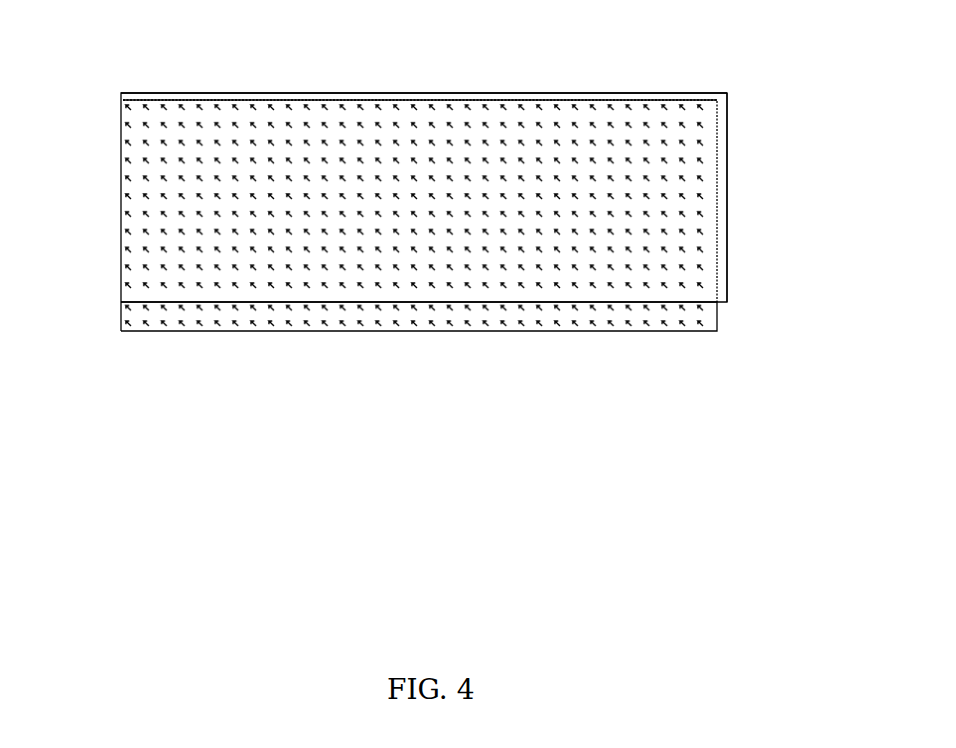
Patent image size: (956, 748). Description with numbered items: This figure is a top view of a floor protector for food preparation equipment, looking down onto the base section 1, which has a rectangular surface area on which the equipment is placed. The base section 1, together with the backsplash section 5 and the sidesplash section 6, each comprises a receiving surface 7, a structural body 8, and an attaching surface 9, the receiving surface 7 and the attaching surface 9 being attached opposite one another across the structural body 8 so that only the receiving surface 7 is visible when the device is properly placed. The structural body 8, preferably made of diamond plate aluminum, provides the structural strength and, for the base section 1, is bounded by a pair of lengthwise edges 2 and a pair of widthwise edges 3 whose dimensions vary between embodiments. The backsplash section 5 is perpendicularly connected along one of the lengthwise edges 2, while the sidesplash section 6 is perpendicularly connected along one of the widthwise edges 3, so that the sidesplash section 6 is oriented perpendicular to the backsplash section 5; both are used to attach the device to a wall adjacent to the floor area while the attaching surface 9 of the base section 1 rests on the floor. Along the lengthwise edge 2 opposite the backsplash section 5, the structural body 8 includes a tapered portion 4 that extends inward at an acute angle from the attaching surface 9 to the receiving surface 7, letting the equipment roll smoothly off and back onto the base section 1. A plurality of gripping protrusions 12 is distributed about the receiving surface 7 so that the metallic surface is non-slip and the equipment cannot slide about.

The base section 1 is at (106, 217).
The pair of lengthwise edges 2 is at (633, 100).
The pair of widthwise edges 3 is at (122, 113).
The tapered portion 4 is at (717, 318).
The backsplash section 5 is at (475, 78).
The sidesplash section 6 is at (750, 198).
The receiving surface 7 is at (133, 276).
The structural body 8 is at (398, 99).
The attaching surface 9 is at (213, 93).
The plurality of gripping protrusions 12 is at (178, 322).